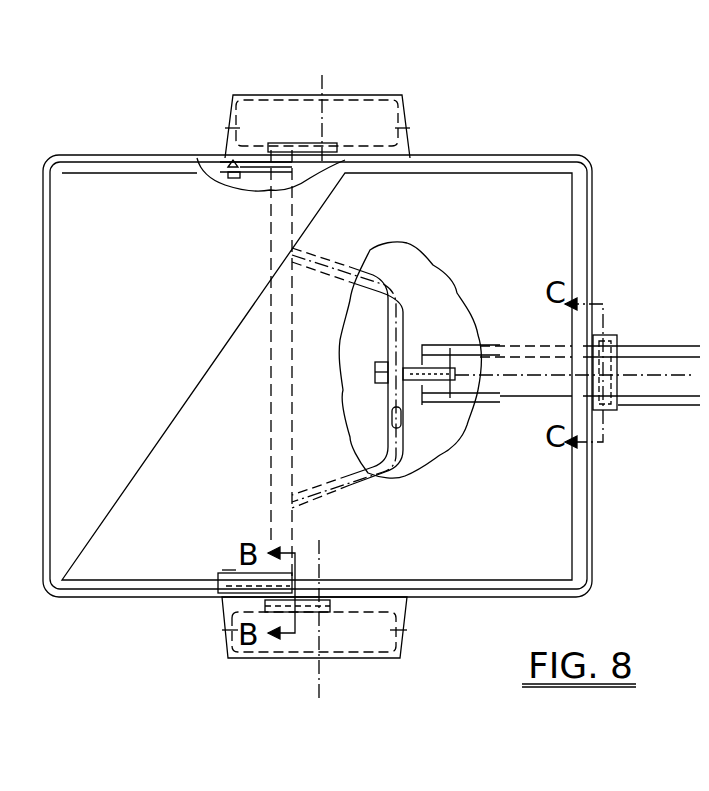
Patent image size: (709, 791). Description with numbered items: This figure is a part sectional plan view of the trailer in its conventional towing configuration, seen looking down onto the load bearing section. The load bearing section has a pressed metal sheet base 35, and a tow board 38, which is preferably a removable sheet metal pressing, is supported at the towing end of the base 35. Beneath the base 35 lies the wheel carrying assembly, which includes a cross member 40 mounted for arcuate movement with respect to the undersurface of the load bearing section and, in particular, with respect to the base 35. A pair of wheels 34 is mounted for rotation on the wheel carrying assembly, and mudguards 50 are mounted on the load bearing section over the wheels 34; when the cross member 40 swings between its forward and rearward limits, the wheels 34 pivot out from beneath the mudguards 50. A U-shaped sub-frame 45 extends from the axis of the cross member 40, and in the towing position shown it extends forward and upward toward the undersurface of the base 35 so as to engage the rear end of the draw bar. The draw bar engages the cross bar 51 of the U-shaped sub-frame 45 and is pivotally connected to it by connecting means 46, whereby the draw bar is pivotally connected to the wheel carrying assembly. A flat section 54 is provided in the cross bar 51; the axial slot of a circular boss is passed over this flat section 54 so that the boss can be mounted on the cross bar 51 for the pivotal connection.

The wheels 34 is at (372, 100).
The base 35 is at (317, 369).
The tow board 38 is at (580, 210).
The cross member 40 is at (275, 410).
The U-shaped sub-frame 45 is at (338, 263).
The connecting means 46 is at (403, 345).
The mudguards 50 is at (256, 105).
The cross bar 51 is at (398, 302).
The flat section 54 is at (403, 420).